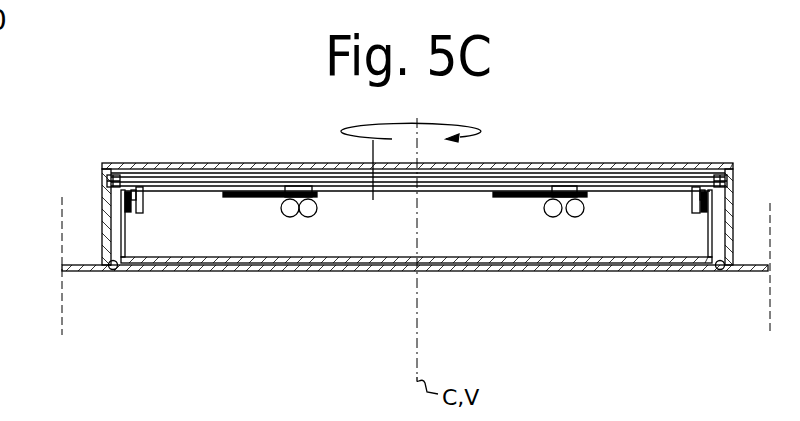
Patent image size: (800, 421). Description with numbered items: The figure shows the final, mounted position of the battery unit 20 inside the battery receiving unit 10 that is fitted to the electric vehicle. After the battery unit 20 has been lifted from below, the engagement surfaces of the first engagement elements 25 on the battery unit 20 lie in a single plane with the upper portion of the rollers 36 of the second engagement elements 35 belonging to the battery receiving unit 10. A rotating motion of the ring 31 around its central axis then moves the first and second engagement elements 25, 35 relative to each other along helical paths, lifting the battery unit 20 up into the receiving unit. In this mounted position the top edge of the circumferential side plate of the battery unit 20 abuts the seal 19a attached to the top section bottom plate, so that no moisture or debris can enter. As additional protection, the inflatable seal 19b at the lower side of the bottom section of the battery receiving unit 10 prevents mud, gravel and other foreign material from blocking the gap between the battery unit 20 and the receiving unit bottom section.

The battery receiving unit 10 is at (700, 164).
The seal 19a is at (717, 190).
The inflatable seal 19b is at (712, 272).
The battery unit 20 is at (660, 272).
The first engagement elements 25 is at (123, 193).
The ring 31 is at (466, 200).
The second engagement elements 35 is at (295, 193).
The rollers 36 is at (125, 200).